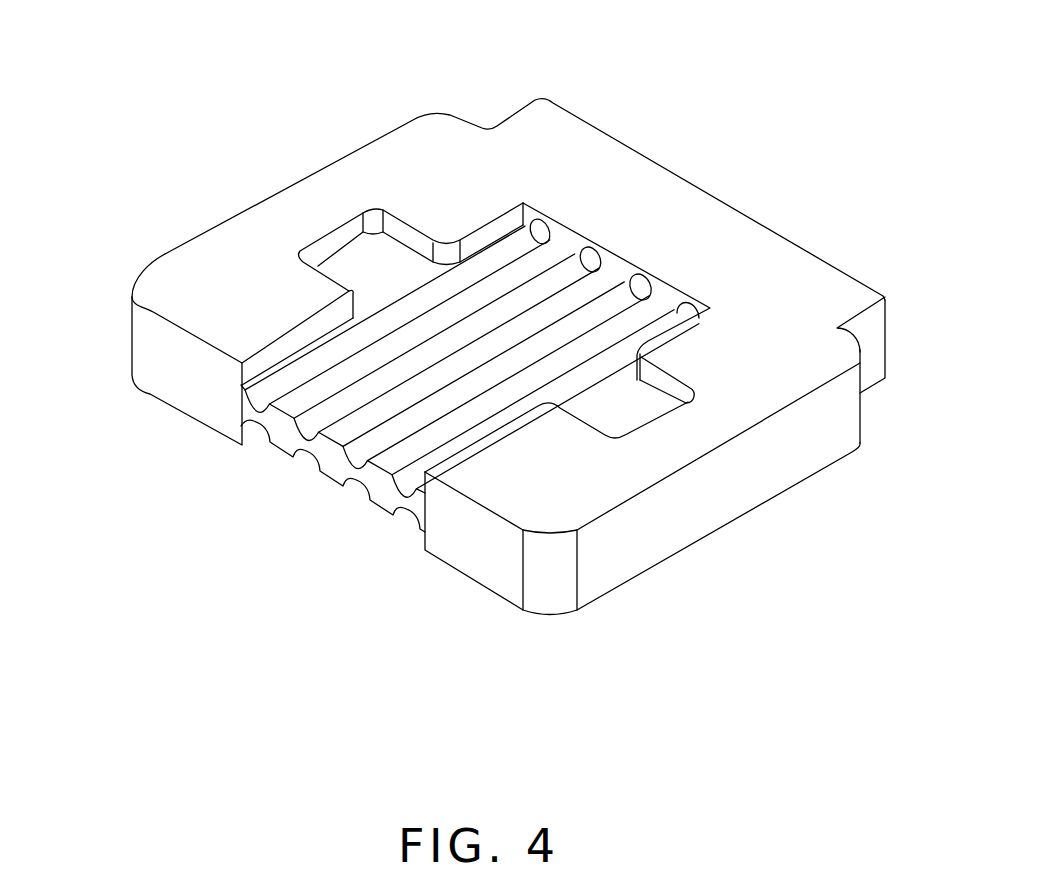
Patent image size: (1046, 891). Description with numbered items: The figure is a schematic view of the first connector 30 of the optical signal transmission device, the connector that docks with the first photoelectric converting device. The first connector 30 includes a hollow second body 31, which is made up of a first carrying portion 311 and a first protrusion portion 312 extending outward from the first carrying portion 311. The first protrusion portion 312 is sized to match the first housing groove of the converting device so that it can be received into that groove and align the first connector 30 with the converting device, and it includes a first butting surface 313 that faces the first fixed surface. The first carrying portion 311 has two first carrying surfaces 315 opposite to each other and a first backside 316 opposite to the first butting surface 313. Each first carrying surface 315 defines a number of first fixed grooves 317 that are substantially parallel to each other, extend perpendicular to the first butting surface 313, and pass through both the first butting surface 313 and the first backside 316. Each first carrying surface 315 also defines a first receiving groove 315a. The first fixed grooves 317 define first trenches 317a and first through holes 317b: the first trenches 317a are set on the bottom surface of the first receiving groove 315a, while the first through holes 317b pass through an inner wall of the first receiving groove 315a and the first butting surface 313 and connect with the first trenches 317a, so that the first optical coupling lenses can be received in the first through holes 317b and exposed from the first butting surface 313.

The first connector 30 is at (501, 331).
The second body 31 is at (501, 370).
The first carrying portion 311 is at (808, 440).
The first protrusion portion 312 is at (873, 358).
The first butting surface 313 is at (727, 204).
The first carrying surface 315 is at (207, 278).
The first receiving groove 315a is at (630, 407).
The first backside 316 is at (192, 393).
The first fixed groove 317 is at (243, 87).
The first trench 317a is at (333, 353).
The first through hole 317b is at (543, 230).